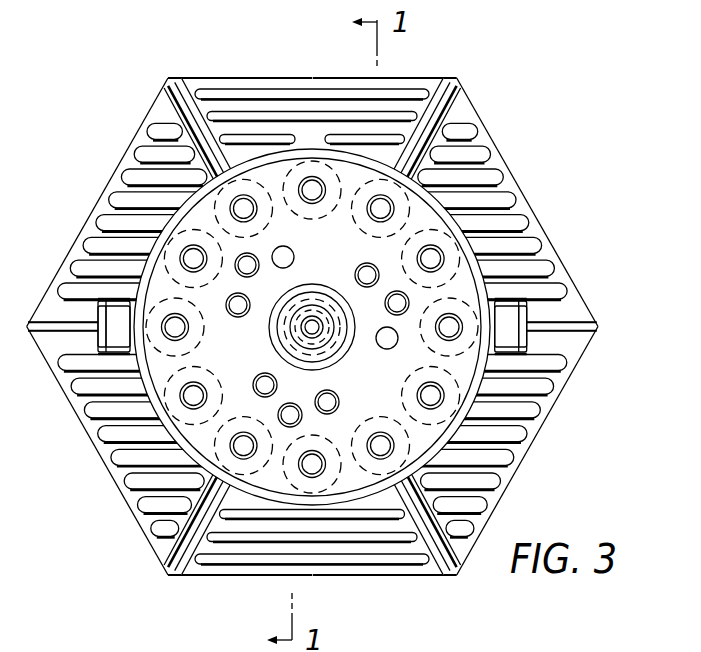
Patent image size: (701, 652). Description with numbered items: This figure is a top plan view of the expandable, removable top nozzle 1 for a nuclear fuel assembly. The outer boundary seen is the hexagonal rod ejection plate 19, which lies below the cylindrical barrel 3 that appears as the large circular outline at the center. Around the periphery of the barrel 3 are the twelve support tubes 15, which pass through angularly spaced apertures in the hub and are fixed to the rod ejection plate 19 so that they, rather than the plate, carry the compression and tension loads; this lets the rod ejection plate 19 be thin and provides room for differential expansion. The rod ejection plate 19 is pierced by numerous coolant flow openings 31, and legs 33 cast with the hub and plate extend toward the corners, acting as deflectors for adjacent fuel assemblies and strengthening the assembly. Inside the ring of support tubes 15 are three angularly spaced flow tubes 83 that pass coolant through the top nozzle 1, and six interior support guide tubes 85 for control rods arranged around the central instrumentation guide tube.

The top nozzle 1 is at (320, 349).
The barrel 3 is at (312, 327).
The support tubes 15 is at (262, 210).
The rod ejection plate 19 is at (537, 440).
The coolant flow openings 31 is at (472, 507).
The legs 33 is at (182, 123).
The flow tubes 83 is at (242, 318).
The interior support guide tubes 85 is at (264, 374).